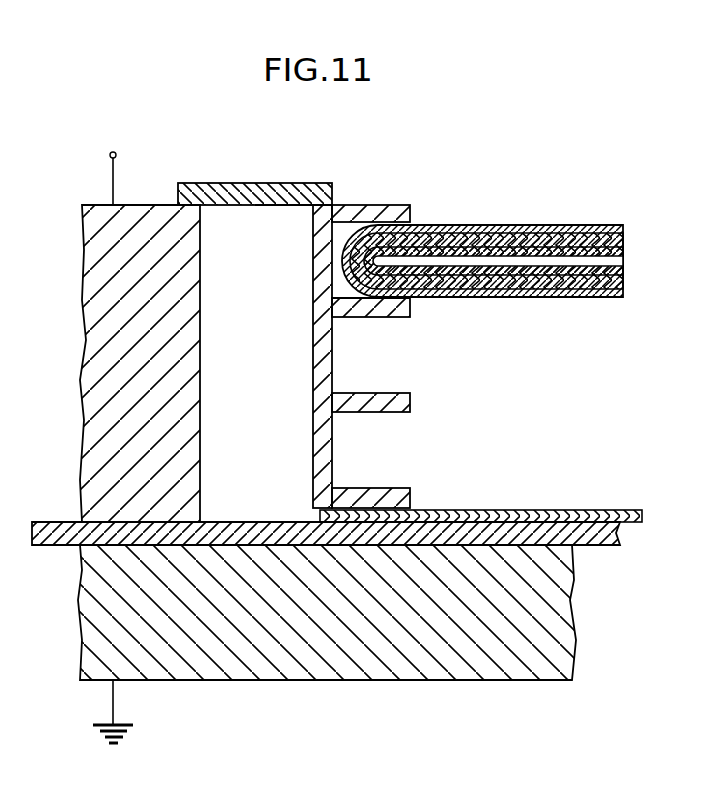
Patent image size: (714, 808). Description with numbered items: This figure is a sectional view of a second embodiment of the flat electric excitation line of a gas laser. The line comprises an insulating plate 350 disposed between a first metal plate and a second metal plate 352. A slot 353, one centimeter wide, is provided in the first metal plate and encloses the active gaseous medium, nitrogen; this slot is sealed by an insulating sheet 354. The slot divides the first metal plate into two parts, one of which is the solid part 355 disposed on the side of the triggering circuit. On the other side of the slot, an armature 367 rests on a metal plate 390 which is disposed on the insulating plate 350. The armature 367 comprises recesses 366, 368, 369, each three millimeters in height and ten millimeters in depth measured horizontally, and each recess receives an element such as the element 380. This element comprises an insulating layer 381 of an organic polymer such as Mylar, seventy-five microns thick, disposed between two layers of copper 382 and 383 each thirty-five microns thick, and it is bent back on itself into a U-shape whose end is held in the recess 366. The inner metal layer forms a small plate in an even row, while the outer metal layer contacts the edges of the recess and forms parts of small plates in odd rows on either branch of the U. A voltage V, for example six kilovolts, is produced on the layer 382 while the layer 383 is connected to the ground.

The insulating plate 350 is at (66, 536).
The second metal plate 352 is at (548, 612).
The slot 353 is at (222, 230).
The insulating sheet 354 is at (297, 183).
The part of the first metal plate 355 is at (112, 382).
The recess 366 is at (340, 228).
The armature 367 is at (323, 312).
The recess 368 is at (345, 364).
The recess 369 is at (345, 452).
The element 380 is at (491, 259).
The insulating layer 381 is at (515, 237).
The copper layer 382 is at (475, 298).
The copper layer 383 is at (578, 233).
The metal plate 390 is at (612, 510).